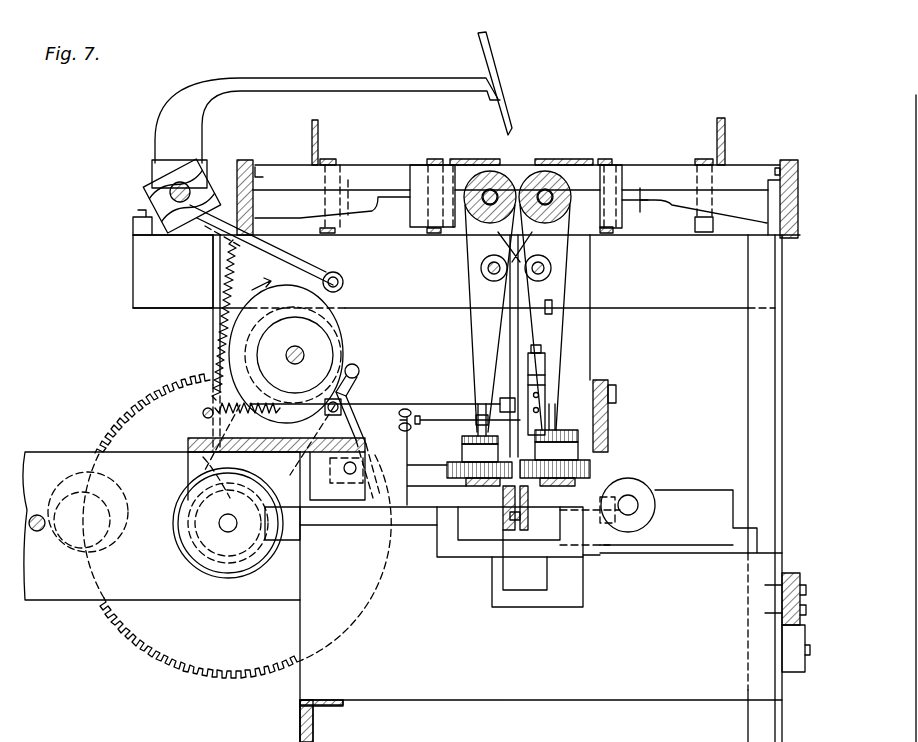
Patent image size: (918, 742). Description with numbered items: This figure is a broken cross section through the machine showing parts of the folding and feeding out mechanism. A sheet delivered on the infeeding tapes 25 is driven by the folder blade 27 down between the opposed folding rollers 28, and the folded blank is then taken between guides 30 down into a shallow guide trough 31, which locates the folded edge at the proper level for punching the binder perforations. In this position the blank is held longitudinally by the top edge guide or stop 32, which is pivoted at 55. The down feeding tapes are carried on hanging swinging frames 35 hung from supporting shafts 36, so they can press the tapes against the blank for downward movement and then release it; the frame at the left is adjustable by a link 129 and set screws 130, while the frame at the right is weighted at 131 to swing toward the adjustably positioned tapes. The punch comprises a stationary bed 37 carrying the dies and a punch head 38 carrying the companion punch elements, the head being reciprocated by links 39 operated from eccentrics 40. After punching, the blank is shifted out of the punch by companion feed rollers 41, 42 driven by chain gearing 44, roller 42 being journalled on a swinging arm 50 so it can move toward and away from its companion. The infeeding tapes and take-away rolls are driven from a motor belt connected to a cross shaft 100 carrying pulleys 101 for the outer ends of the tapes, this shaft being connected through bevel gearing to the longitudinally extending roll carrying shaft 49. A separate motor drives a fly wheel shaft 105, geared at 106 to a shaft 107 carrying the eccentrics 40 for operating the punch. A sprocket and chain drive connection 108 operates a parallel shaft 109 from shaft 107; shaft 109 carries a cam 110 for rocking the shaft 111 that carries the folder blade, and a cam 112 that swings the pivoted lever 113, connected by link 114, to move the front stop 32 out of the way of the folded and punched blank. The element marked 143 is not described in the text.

The tapes 25 is at (330, 160).
The folder blade 27 is at (508, 128).
The folding rollers 28 is at (537, 171).
The guides 30 is at (500, 240).
The guide trough 31 is at (510, 515).
The top edge guide or stop 32 is at (517, 330).
The swinging frames 35 is at (490, 380).
The supporting shafts 36 is at (481, 268).
The stationary bed 37 is at (503, 493).
The punch head 38 is at (690, 492).
The links 39 is at (333, 527).
The eccentrics 40 is at (195, 560).
The feed roller 41 is at (447, 474).
The feed roller 42 is at (590, 466).
The chain gearing 44 is at (578, 437).
The roll carrying shaft 49 is at (490, 190).
The swinging arm 50 is at (553, 435).
The pivot 55 is at (493, 278).
The cross shaft 100 is at (642, 200).
The pulleys 101 is at (415, 180).
The fly wheel shaft 105 is at (38, 515).
The gearing 106 is at (78, 500).
The shaft 107 is at (228, 523).
The sprocket and chain drive connection 108 is at (205, 428).
The shaft 109 is at (322, 348).
The cam 110 is at (341, 308).
The shaft 111 is at (158, 188).
The cam 112 is at (305, 352).
The pivoted lever 113 is at (359, 372).
The link 114 is at (383, 408).
The link 129 is at (462, 455).
The set screws 130 is at (398, 425).
The weight 131 is at (610, 420).
The gear 143 is at (462, 441).